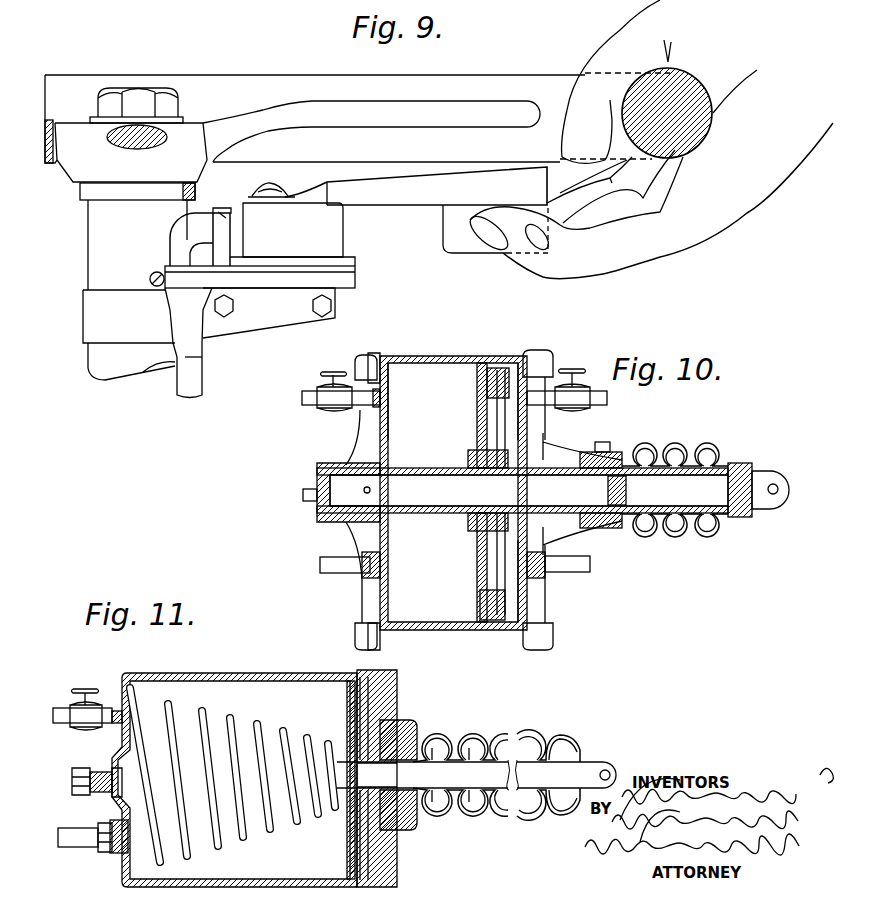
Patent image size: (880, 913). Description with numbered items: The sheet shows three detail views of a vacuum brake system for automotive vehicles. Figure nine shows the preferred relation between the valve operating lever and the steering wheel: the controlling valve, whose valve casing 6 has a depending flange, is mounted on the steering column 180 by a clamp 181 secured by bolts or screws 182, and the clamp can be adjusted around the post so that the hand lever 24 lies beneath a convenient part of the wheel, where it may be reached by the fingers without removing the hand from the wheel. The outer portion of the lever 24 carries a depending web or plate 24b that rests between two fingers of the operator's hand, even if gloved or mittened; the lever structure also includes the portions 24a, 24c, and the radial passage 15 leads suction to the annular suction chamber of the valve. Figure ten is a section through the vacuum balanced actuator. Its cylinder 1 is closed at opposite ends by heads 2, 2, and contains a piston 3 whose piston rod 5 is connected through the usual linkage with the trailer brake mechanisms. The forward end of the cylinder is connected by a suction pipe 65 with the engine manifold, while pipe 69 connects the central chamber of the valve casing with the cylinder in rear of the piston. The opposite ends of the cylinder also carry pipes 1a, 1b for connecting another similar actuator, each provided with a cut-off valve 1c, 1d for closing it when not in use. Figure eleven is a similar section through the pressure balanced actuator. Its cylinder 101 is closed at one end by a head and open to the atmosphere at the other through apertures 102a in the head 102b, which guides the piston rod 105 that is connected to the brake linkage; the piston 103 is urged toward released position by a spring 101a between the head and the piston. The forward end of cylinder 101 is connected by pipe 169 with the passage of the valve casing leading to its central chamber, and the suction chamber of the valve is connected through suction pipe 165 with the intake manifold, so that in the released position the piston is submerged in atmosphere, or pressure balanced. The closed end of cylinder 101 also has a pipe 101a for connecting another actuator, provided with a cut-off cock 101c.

In FIG. 10, the cylinder 1 is at (432, 365).
In FIG. 10, the pipe 1a is at (303, 402).
In FIG. 10, the pipe 1b is at (607, 402).
In FIG. 10, the cut-off valve 1c is at (325, 388).
In FIG. 10, the cut-off valve 1d is at (578, 368).
In FIG. 10, the head 2 is at (560, 432).
In FIG. 10, the piston 3 is at (500, 428).
In FIG. 10, the piston rod 5 is at (752, 475).
In FIG. 9, the valve casing 6 is at (330, 231).
In FIG. 9, the radial passage 15 is at (222, 235).
In FIG. 9, the hand lever 24 is at (416, 186).
In FIG. 9, the lever cap 24a is at (296, 197).
In FIG. 9, the depending web 24b is at (462, 252).
In FIG. 9, the lever lug 24c is at (232, 196).
In FIG. 10, the suction pipe 65 is at (320, 565).
In FIG. 10, the pipe 69 is at (578, 572).
In FIG. 9, the suction pipe 165 is at (188, 318).
In FIG. 9, the pipe 169 is at (203, 380).
In FIG. 11, the pipe 169 is at (72, 840).
In FIG. 9, the steering column 180 is at (131, 361).
In FIG. 9, the clamp 181 is at (129, 316).
In FIG. 9, the bolts 182 is at (312, 306).
In FIG. 11, the cylinder 101 is at (222, 673).
In FIG. 11, the spring 101a is at (232, 725).
In FIG. 11, the cut-off cock 101c is at (98, 703).
In FIG. 11, the apertures 102a is at (410, 715).
In FIG. 11, the head 102b is at (398, 690).
In FIG. 11, the piston 103 is at (345, 685).
In FIG. 11, the piston rod 105 is at (460, 785).